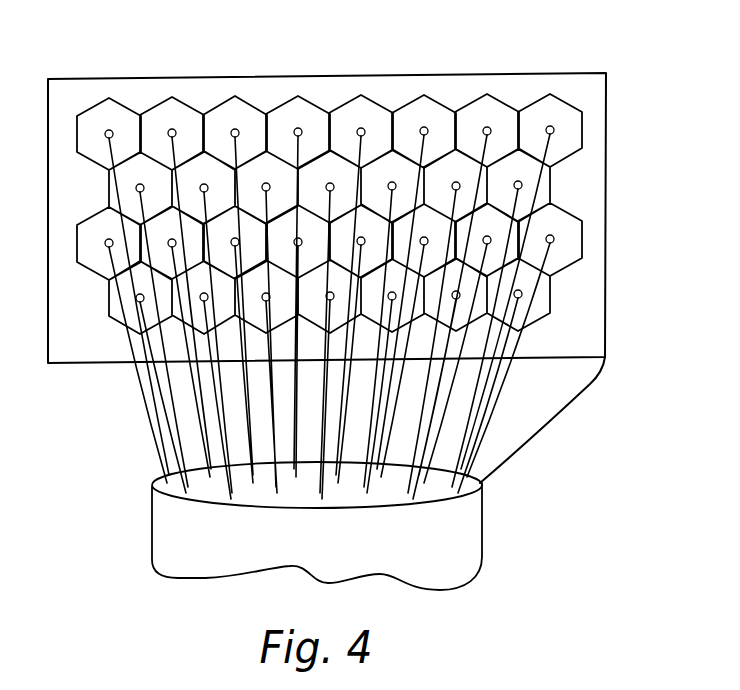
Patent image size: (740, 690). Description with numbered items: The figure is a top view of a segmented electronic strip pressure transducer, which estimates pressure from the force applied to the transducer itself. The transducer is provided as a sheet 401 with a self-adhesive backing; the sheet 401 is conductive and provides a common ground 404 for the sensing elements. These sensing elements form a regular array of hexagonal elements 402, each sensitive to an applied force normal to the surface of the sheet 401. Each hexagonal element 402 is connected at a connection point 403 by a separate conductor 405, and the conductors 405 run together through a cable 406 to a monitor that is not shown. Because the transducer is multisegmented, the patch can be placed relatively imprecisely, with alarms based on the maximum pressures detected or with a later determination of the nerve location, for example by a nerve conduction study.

The sheet 401 is at (570, 80).
The hexagonal elements 402 is at (443, 113).
The connection point 403 is at (554, 130).
The common ground 404 is at (583, 390).
The conductor 405 is at (147, 389).
The cable 406 is at (160, 548).